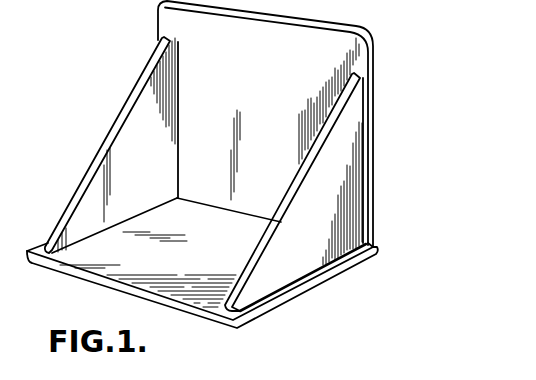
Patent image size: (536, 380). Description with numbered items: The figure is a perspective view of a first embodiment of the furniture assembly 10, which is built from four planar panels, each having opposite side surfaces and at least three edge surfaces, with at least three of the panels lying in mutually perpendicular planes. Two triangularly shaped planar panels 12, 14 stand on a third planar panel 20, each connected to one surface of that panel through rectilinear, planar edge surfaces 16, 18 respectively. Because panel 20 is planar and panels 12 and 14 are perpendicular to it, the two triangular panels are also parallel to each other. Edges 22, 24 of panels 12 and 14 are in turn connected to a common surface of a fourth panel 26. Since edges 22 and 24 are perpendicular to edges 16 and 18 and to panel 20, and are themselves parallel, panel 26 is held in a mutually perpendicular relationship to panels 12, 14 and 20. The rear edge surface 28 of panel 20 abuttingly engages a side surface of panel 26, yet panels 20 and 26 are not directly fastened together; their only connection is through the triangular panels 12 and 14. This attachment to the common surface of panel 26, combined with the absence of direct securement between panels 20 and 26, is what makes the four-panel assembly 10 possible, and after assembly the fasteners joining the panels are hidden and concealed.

The furniture assembly 10 is at (236, 164).
The triangularly shaped planar panel 12 is at (140, 164).
The triangularly shaped planar panel 14 is at (320, 236).
The rectilinear planar edge surface 16 is at (123, 222).
The rectilinear planar edge surface 18 is at (300, 277).
The third panel 20 is at (160, 271).
The edge of panel 12 22 is at (178, 92).
The edge of panel 14 24 is at (362, 160).
The fourth panel 26 is at (287, 103).
The rear edge surface 28 is at (218, 203).